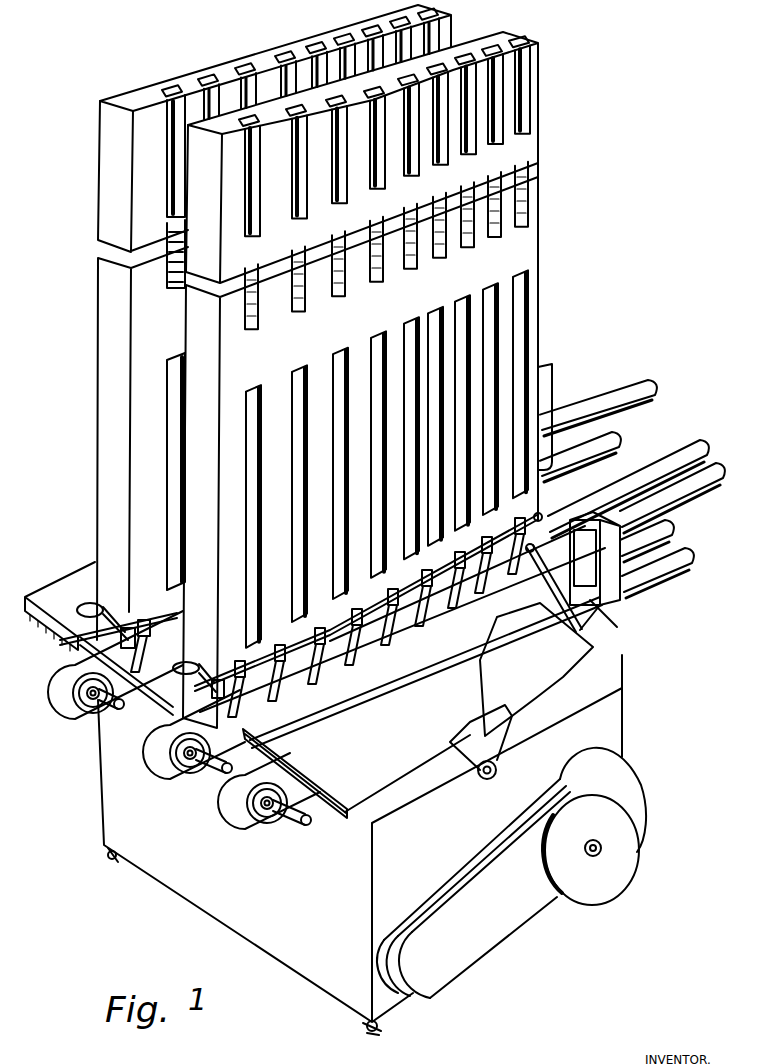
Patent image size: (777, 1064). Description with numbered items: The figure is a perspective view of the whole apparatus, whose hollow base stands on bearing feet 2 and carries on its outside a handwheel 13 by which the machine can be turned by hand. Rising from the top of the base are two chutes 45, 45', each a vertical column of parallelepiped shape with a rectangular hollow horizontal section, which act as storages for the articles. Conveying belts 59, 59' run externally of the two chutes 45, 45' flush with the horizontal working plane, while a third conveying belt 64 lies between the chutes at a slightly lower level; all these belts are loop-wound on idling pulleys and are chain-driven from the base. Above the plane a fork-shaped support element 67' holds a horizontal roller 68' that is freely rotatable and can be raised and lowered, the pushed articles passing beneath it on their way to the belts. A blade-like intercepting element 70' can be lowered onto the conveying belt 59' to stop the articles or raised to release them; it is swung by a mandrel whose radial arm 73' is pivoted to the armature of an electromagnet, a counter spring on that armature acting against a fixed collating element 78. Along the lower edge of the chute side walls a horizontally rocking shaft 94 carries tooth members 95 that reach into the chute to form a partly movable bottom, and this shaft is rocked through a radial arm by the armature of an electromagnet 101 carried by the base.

The bearing feet 2 is at (364, 1034).
The handwheel 13 is at (594, 884).
The chute 45 is at (249, 322).
The chute 45' is at (389, 380).
The conveying belt 59 is at (357, 540).
The conveying belt 59' is at (464, 686).
The third conveying belt 64 is at (161, 758).
The fork-shaped support element 67' is at (560, 600).
The horizontal roller 68' is at (390, 619).
The intercepting blade element 70' is at (402, 683).
The radial arm 73' is at (571, 691).
The fixed collating element 78 is at (607, 617).
The shaft 94 is at (170, 612).
The tooth member 95 is at (128, 608).
The electromagnet 101 is at (540, 424).